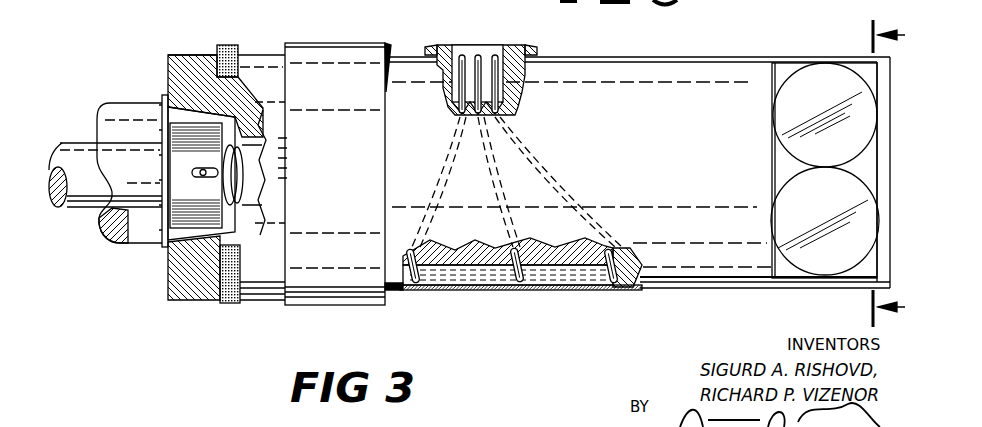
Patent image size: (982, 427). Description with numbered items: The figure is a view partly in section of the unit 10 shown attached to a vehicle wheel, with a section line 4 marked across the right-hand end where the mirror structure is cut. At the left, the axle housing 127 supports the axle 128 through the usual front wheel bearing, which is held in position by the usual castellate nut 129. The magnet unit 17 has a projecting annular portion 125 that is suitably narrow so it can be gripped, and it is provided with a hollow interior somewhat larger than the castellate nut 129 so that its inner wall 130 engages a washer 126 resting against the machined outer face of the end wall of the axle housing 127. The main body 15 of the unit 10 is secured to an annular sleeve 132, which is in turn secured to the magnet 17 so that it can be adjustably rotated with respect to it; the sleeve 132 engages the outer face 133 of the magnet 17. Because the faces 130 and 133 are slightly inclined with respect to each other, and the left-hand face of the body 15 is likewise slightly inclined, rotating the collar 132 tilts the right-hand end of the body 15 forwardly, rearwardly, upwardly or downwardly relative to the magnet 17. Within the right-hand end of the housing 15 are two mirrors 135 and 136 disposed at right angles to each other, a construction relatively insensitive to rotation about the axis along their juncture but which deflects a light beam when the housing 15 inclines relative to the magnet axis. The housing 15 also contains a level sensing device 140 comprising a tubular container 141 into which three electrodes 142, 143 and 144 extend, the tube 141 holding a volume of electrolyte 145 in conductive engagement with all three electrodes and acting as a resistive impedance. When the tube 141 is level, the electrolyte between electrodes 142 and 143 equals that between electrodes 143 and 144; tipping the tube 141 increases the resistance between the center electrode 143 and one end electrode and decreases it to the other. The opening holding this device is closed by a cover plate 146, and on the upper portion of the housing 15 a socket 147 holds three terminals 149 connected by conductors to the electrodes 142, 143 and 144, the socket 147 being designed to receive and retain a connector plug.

The unit 10 is at (817, 0).
The section line 4- 4 is at (868, 174).
The main body 15 is at (695, 68).
The magnet unit 17 is at (191, 54).
The projecting annular portion 125 is at (232, 308).
The washer 126 is at (167, 248).
The axle housing 127 is at (128, 240).
The axle 128 is at (60, 143).
The castellate nut 129 is at (183, 143).
The inner wall 130 is at (168, 72).
The annular sleeve 132 is at (348, 307).
The outer face 133 is at (286, 56).
The mirror 135 is at (862, 120).
The mirror 136 is at (858, 248).
The level sensing device 140 is at (568, 342).
The tubular container 141 is at (467, 286).
The electrode 142 is at (413, 281).
The center electrode 143 is at (517, 284).
The electrode 144 is at (613, 290).
The electrolyte 145 is at (493, 263).
The cover plate 146 is at (587, 284).
The socket 147 is at (463, 53).
The terminals 149 is at (496, 55).